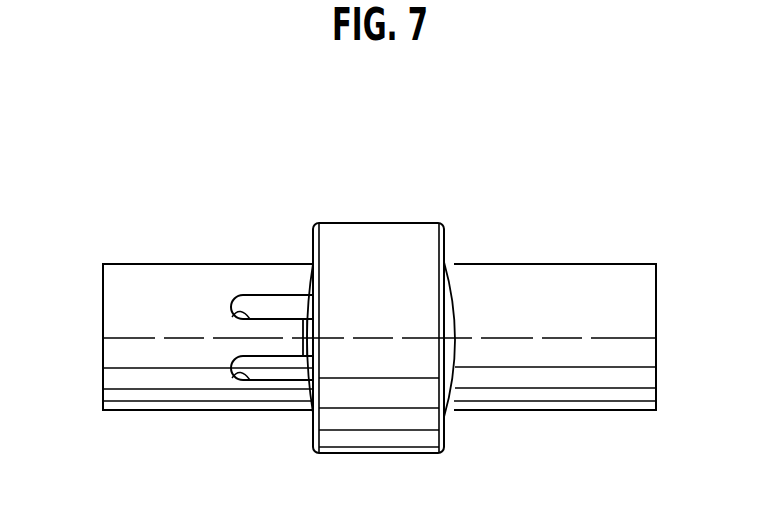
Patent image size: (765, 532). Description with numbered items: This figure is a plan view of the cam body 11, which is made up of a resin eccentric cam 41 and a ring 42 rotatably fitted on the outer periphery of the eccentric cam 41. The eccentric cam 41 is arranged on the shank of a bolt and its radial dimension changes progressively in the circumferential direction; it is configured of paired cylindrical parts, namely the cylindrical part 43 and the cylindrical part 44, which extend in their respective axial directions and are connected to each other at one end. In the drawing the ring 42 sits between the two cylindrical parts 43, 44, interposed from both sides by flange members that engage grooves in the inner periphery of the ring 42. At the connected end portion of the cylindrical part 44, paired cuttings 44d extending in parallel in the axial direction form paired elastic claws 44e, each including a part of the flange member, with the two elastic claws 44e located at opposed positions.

The cam body 11 is at (409, 209).
The eccentric cam 41 is at (525, 239).
The ring 42 is at (354, 232).
The cylindrical part 43 is at (606, 271).
The cylindrical part 44 is at (152, 273).
The cuttings 44d is at (230, 313).
The elastic claws 44e is at (281, 337).